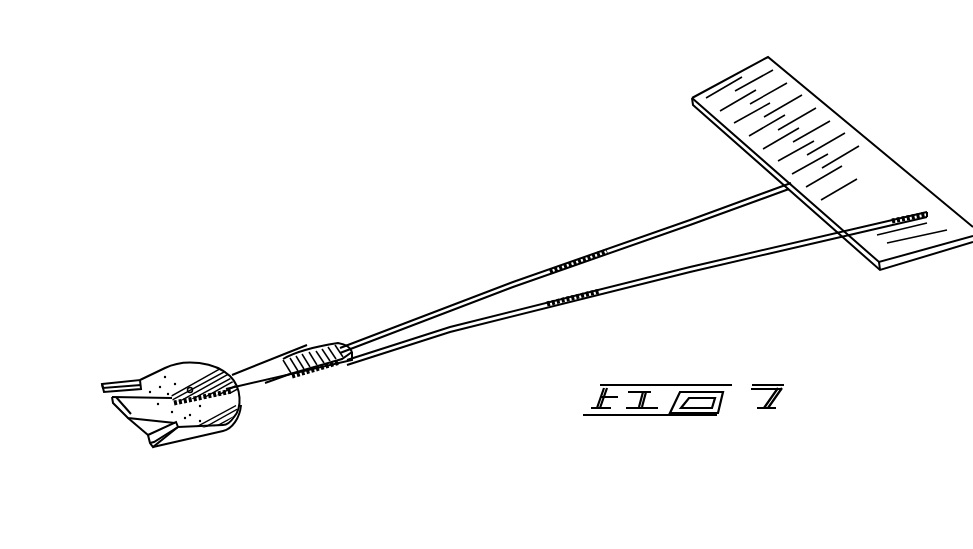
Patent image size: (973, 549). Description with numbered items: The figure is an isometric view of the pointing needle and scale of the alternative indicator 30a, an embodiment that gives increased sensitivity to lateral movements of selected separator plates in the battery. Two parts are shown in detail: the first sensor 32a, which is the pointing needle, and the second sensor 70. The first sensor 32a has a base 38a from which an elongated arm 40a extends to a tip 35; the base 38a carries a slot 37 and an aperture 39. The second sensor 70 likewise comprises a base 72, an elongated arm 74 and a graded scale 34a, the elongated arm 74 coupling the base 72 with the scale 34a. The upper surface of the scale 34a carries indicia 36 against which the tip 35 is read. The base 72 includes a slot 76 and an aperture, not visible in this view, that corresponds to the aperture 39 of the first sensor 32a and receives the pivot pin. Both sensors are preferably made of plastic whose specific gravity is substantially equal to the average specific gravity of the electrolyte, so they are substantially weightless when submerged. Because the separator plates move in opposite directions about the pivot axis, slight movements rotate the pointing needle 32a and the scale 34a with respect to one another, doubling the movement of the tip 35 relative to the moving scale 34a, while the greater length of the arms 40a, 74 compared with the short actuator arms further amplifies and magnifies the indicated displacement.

The indicator 30a is at (338, 173).
The first sensor 32a is at (479, 337).
The graded scale 34a is at (711, 86).
The tip 35 is at (906, 213).
The indicia 36 is at (812, 91).
The slot 37 is at (127, 385).
The base 38a is at (268, 392).
The aperture 39 is at (191, 386).
The elongated arm 40a is at (713, 273).
The second sensor 70 is at (621, 233).
The base 72 is at (310, 344).
The elongated arm 74 is at (511, 278).
The slot 76 is at (170, 444).